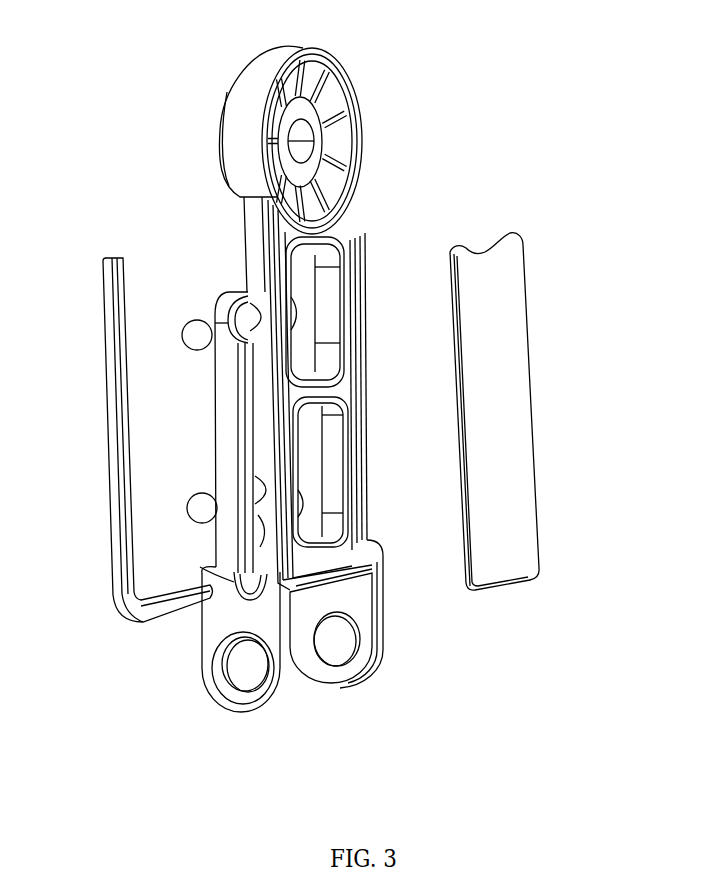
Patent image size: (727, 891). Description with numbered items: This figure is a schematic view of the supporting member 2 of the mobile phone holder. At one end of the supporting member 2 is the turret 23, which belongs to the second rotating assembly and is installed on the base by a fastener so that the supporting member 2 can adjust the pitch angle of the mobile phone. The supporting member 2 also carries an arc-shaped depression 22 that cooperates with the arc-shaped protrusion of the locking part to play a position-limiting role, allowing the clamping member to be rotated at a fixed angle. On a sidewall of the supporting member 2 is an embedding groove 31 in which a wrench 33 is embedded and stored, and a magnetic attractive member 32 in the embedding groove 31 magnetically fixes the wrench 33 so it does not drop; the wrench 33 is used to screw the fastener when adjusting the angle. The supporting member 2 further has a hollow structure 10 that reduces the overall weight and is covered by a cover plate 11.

The supporting member 2 is at (341, 125).
The arc-shaped depression 22 is at (337, 92).
The hollow structure 10 is at (307, 343).
The cover plate 11 is at (503, 360).
The turret 23 is at (380, 667).
The embedding groove 31 is at (262, 441).
The magnetic attractive member 32 is at (192, 321).
The wrench 33 is at (157, 627).